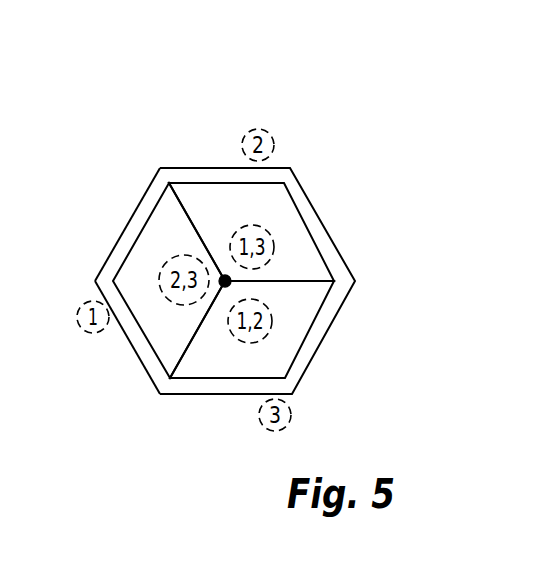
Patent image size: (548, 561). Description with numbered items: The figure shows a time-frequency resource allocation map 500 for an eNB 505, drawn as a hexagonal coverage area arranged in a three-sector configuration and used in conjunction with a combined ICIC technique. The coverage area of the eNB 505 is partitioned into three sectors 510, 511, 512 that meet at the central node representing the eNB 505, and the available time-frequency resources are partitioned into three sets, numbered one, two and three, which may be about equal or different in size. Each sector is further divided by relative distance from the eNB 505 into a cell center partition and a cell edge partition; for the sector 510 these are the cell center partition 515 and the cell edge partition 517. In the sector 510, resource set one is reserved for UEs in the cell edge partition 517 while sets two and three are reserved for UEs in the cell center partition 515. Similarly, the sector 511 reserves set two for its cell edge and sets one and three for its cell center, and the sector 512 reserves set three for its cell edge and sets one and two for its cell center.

The time-frequency resource allocation map 500 is at (105, 85).
The eNB 505 is at (224, 276).
The sector 510 is at (155, 213).
The sector 511 is at (295, 211).
The sector 512 is at (312, 312).
The cell center partition 515 is at (168, 349).
The cell edge partition 517 is at (122, 247).